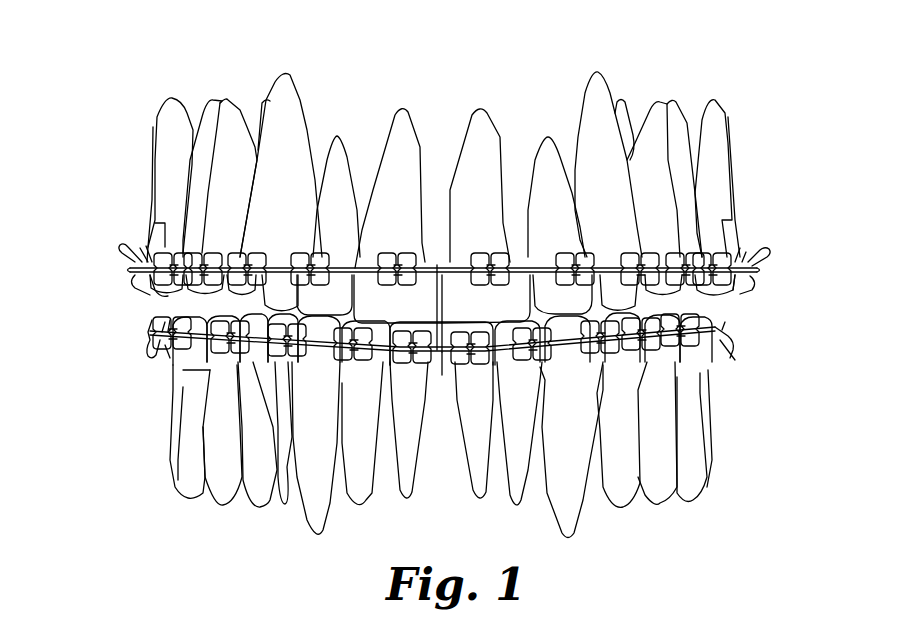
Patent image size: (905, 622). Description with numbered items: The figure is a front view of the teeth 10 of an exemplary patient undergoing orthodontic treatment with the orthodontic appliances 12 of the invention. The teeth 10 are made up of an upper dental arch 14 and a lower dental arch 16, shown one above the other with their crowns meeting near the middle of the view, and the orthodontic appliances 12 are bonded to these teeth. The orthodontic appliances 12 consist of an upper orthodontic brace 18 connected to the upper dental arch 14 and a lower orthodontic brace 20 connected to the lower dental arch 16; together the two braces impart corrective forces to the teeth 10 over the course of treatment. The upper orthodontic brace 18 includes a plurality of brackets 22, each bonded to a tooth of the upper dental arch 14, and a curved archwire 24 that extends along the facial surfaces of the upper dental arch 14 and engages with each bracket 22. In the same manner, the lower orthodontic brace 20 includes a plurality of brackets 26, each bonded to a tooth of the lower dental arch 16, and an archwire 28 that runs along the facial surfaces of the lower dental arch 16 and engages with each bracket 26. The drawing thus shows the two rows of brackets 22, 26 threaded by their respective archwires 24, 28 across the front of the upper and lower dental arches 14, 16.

The teeth 10 is at (648, 48).
The orthodontic appliances 12 is at (740, 304).
The upper dental arch 14 is at (125, 168).
The lower dental arch 16 is at (127, 427).
The upper orthodontic brace 18 is at (100, 270).
The lower orthodontic brace 20 is at (125, 334).
The brackets 22 is at (297, 260).
The curved archwire 24 is at (432, 262).
The brackets 26 is at (284, 360).
The archwire 28 is at (388, 362).